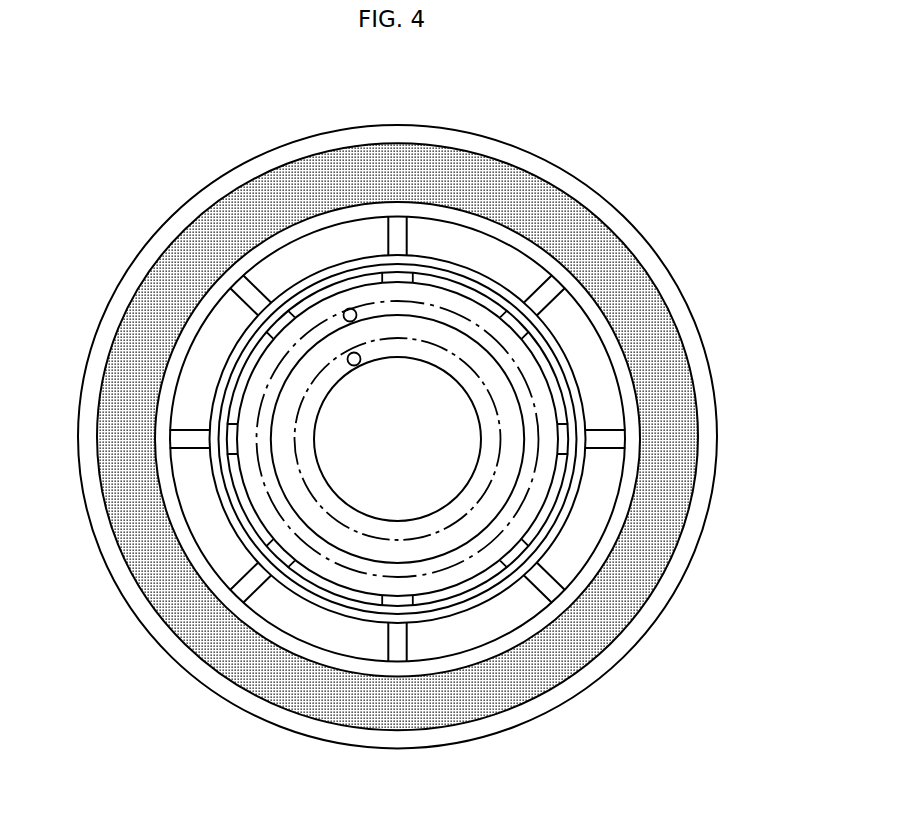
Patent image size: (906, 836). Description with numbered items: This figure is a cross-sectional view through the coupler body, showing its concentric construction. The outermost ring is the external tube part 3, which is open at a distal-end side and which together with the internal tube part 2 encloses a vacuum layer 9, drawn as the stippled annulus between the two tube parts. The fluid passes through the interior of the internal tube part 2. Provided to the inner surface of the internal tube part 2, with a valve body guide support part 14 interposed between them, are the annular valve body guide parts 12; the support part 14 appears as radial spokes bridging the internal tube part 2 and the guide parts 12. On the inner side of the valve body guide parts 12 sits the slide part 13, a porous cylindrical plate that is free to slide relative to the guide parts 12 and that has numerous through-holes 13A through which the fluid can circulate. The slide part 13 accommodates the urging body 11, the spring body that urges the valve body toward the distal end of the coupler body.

The internal tube part 2 is at (620, 335).
The external tube part 3 is at (640, 245).
The vacuum layer 9 is at (558, 217).
The urging body 11 is at (265, 413).
The valve body guide parts 12 is at (470, 602).
The slide part 13 is at (323, 577).
The through-holes 13A is at (515, 322).
The valve body guide support part 14 is at (250, 566).